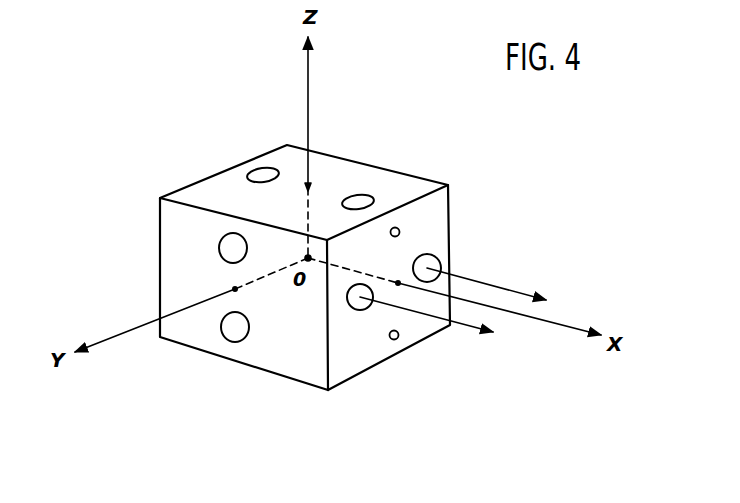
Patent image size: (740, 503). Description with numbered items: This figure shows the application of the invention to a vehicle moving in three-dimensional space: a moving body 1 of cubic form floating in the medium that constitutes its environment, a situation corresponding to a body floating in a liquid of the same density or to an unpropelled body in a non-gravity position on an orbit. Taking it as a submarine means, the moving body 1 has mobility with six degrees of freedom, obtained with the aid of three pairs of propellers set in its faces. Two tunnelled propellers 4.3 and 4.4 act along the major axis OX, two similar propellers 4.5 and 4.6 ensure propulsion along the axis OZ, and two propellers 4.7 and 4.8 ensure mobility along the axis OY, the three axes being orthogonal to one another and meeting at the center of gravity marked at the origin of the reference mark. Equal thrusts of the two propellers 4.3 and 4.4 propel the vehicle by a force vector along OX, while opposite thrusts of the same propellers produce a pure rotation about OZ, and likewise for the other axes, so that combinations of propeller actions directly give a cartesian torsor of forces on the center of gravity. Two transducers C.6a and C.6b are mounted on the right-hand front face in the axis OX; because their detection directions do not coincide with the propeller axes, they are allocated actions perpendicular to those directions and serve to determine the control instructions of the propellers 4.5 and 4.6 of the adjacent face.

The moving body 1 is at (448, 182).
The tunnelled propeller 4.3 is at (357, 310).
The tunnelled propeller 4.4 is at (441, 266).
The propeller 4.5 is at (255, 169).
The propeller 4.6 is at (358, 196).
The propeller 4.7 is at (219, 248).
The propeller 4.8 is at (230, 341).
The transducer C.6a is at (398, 338).
The transducer C.6b is at (400, 232).